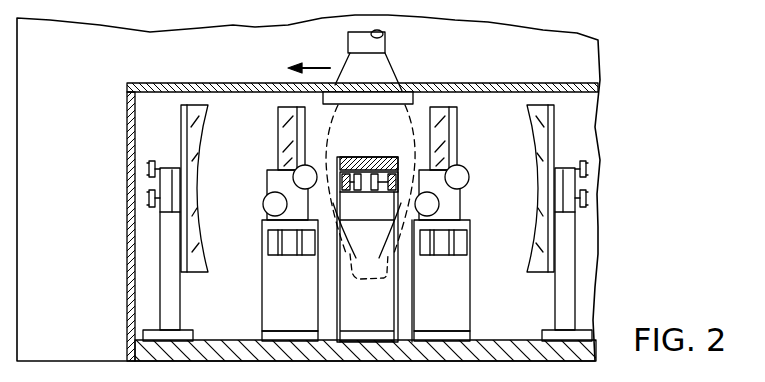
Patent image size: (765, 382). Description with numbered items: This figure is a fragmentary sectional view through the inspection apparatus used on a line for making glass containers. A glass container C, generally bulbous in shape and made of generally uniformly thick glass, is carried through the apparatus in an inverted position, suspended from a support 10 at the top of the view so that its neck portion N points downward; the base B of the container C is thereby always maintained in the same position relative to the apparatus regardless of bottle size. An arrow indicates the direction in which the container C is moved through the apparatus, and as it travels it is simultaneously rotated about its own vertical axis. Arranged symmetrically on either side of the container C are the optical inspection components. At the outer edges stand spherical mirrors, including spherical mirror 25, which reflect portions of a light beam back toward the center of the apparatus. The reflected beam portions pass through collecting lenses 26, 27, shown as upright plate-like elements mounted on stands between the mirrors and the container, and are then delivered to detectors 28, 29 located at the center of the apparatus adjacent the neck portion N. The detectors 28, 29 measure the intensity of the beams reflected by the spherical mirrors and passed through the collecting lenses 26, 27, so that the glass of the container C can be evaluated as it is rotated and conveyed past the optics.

The support 10 is at (388, 60).
The spherical mirror 25 is at (192, 250).
The collecting lens 26 is at (455, 123).
The collecting lens 27 is at (278, 118).
The detector 28 is at (380, 193).
The detector 29 is at (355, 193).
The base B is at (405, 83).
The container C is at (404, 122).
The neck portion N is at (372, 280).